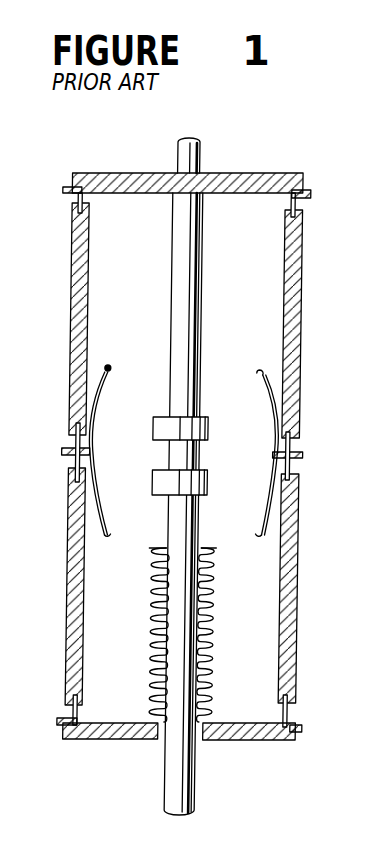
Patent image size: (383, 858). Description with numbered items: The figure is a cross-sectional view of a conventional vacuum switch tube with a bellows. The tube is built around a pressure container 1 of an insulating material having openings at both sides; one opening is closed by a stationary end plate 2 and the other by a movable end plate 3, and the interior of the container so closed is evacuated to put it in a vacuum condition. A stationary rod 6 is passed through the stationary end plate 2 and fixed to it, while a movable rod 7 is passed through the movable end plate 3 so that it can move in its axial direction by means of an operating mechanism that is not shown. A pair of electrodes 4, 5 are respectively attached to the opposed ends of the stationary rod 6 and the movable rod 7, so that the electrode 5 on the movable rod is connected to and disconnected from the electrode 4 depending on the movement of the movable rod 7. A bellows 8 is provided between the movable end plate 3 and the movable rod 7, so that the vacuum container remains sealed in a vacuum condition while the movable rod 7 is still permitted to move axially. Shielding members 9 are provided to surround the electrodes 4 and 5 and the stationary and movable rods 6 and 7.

The pressure container 1 is at (294, 528).
The stationary end plate 2 is at (256, 180).
The movable end plate 3 is at (250, 741).
The electrode 4 is at (206, 417).
The electrode 5 is at (206, 470).
The stationary rod 6 is at (200, 290).
The movable rod 7 is at (177, 525).
The bellows 8 is at (222, 653).
The shielding members 9 is at (103, 418).